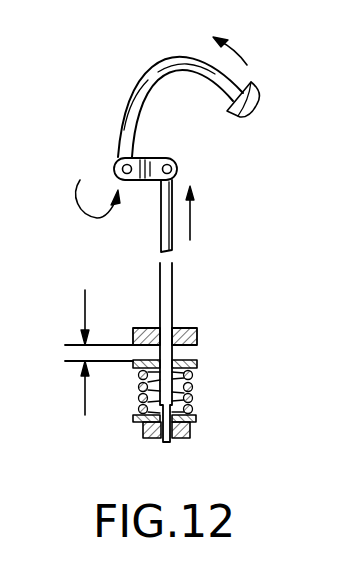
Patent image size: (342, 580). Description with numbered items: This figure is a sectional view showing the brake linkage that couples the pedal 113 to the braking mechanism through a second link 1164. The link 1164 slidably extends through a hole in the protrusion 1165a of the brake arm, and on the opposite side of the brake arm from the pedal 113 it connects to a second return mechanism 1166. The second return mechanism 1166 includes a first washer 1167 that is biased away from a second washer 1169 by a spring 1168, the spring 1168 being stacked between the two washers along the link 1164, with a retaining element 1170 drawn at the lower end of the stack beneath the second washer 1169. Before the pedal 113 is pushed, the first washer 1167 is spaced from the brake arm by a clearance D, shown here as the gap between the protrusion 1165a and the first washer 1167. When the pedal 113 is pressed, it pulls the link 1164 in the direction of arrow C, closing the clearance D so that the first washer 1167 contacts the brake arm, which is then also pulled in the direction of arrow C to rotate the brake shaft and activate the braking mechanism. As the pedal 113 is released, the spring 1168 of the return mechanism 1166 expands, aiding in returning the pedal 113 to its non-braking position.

The pedal 113 is at (250, 111).
The second link 1164 is at (173, 301).
The protrusion 1165a is at (198, 337).
The second return mechanism 1166 is at (207, 467).
The first washer 1167 is at (198, 366).
The spring 1168 is at (193, 392).
The second washer 1169 is at (197, 420).
The nut 1170 is at (140, 427).
The arrow C is at (193, 203).
The clearance D is at (88, 352).